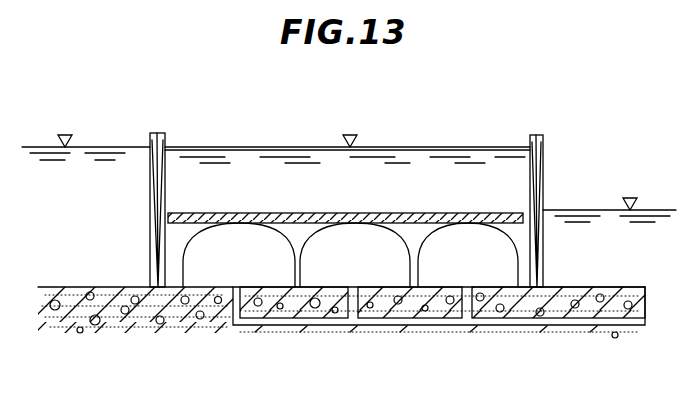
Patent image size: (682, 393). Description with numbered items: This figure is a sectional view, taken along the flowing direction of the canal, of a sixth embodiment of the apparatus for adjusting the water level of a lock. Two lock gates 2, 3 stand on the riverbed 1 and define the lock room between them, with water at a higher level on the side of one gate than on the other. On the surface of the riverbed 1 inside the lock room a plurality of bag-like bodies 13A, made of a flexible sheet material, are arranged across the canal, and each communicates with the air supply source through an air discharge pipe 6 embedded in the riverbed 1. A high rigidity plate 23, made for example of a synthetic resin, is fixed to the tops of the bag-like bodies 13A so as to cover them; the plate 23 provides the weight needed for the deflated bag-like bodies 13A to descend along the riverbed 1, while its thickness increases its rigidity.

The riverbed 1 is at (175, 325).
The lock gate 2 is at (160, 133).
The lock gate 3 is at (537, 135).
The air discharge pipe 6 is at (465, 325).
The bag-like bodies 13A is at (520, 255).
The high rigidity plate 23 is at (425, 213).